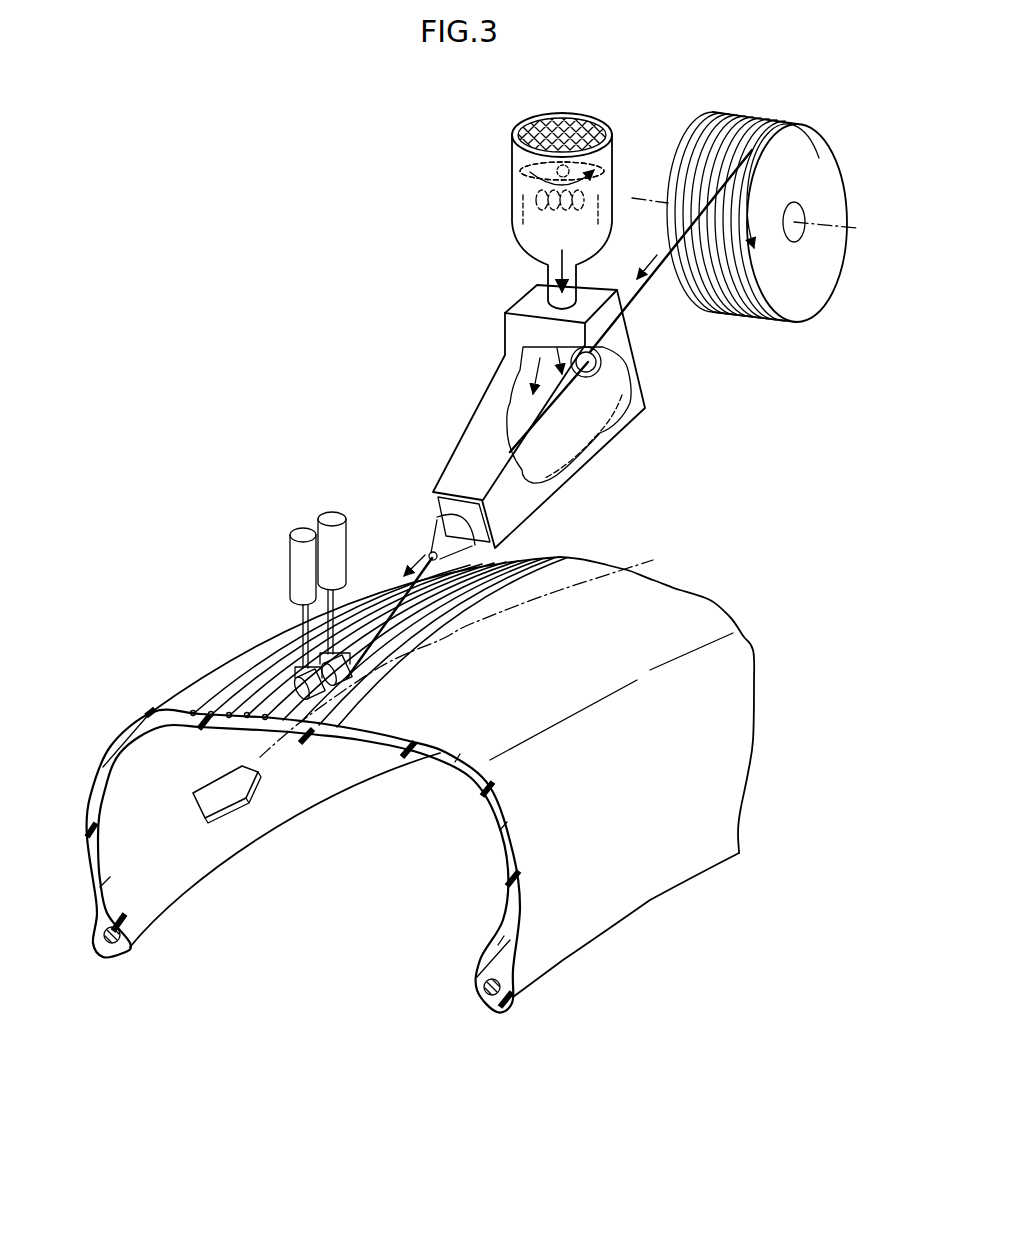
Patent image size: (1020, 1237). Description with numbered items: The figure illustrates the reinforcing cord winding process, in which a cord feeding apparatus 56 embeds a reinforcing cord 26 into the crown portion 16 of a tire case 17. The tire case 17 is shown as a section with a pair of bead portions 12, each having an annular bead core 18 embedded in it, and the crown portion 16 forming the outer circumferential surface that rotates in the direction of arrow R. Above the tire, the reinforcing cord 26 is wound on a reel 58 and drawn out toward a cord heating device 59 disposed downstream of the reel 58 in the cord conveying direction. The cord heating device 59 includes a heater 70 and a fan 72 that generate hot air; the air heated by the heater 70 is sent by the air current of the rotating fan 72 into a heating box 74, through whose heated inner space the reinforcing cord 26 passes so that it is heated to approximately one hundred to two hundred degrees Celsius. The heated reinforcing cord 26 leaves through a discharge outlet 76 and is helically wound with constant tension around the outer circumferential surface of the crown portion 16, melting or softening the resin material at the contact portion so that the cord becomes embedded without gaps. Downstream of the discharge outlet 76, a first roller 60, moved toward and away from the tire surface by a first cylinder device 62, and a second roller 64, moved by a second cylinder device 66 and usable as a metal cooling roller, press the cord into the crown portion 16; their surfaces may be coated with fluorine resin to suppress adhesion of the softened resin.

The bead portion 12 is at (104, 958).
The crown portion 16 is at (229, 711).
The tire case 17 is at (503, 854).
The bead core 18 is at (131, 943).
The reinforcing cord 26 is at (558, 406).
The cord feeding apparatus 56 is at (405, 247).
The reel 58 is at (780, 291).
The cord heating device 59 is at (568, 422).
The first roller 60 is at (354, 686).
The first cylinder device 62 is at (338, 512).
The second roller 64 is at (330, 694).
The second cylinder device 66 is at (290, 552).
The heater 70 is at (512, 220).
The fan 72 is at (605, 168).
The heating box 74 is at (475, 412).
The discharge outlet 76 is at (428, 544).
The direction of rotation R is at (257, 781).